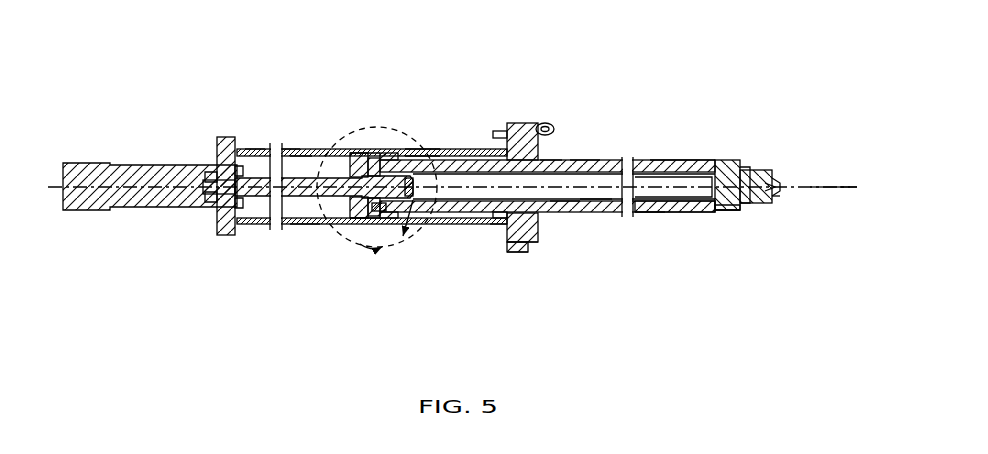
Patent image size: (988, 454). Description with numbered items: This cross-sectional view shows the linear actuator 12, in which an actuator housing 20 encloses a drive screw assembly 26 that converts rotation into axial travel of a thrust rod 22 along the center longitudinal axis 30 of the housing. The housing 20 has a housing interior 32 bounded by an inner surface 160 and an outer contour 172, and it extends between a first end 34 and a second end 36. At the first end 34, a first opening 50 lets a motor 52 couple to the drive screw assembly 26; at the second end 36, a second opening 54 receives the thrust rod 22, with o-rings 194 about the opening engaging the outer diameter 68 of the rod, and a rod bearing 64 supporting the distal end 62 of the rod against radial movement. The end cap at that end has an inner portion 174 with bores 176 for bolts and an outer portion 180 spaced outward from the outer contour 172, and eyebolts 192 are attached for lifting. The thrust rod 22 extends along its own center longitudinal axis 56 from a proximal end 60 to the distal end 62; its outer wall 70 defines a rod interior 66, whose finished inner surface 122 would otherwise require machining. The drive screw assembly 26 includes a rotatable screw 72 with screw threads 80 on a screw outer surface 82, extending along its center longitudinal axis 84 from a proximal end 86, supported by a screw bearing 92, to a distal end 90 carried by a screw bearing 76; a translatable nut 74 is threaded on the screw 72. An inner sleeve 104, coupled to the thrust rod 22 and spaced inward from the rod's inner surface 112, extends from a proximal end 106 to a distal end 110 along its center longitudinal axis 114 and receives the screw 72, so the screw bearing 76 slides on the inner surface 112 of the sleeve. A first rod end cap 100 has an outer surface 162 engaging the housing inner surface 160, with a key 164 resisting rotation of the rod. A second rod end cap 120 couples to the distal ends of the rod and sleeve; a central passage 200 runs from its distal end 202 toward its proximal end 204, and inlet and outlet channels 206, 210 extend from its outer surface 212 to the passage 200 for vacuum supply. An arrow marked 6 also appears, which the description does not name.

The direction arrow 6 is at (402, 227).
The linear actuator 12 is at (668, 70).
The actuator housing 20 is at (290, 149).
The thrust rod 22 is at (650, 165).
The drive screw assembly 26 is at (360, 230).
The center longitudinal axis of the actuator housing 30 is at (818, 183).
The housing interior 32 is at (254, 149).
The first end of the actuator housing 34 is at (226, 134).
The second end of the actuator housing 36 is at (520, 254).
The first opening 50 is at (204, 206).
The motor 52 is at (121, 164).
The second opening 54 is at (548, 157).
The center longitudinal axis of the thrust rod 56 is at (852, 185).
The proximal end of the thrust rod 60 is at (385, 250).
The distal end of the thrust rod 62 is at (732, 214).
The bearing 64 is at (500, 222).
The rod interior 66 is at (595, 200).
The outer diameter of the thrust rod 68 is at (580, 160).
The outer wall of the thrust rod 70 is at (610, 160).
The rotatable drive screw 72 is at (352, 158).
The translatable nut 74 is at (352, 150).
The screw bearing 76 is at (413, 216).
The screw threads 80 is at (299, 149).
The screw outer surface 82 is at (292, 200).
The center longitudinal axis of the rotatable screw 84 is at (853, 190).
The proximal end of the rotatable screw 86 is at (206, 202).
The distal end of the rotatable screw 90 is at (421, 150).
The screw bearing 92 is at (235, 209).
The first rod end cap 100 is at (353, 248).
The inner sleeve 104 is at (640, 214).
The proximal end of the inner sleeve 106 is at (415, 214).
The distal end of the inner sleeve 110 is at (708, 156).
The inner surface 112 is at (565, 203).
The center longitudinal axis of the inner sleeve 114 is at (824, 190).
The second rod end cap 120 is at (776, 179).
The finished inner surface of the thrust rod 122 is at (650, 206).
The inner surface of the actuator housing 160 is at (303, 226).
The outer surface of the first rod end cap 162 is at (392, 152).
The key 164 is at (360, 152).
The outer contour of the actuator housing 172 is at (452, 148).
The inner portion of the second housing end cap 174 is at (505, 228).
The bores 176 is at (538, 243).
The outer portion of the second housing end cap 180 is at (516, 246).
The eyebolts 192 is at (549, 122).
The o-rings 194 is at (522, 150).
The central passage 200 is at (774, 172).
The distal end of the second rod end cap 202 is at (779, 200).
The proximal end of the second rod end cap 204 is at (716, 212).
The inlet channel 206 is at (746, 168).
The outlet channel 210 is at (752, 204).
The outer surface of the second rod end cap 212 is at (728, 160).